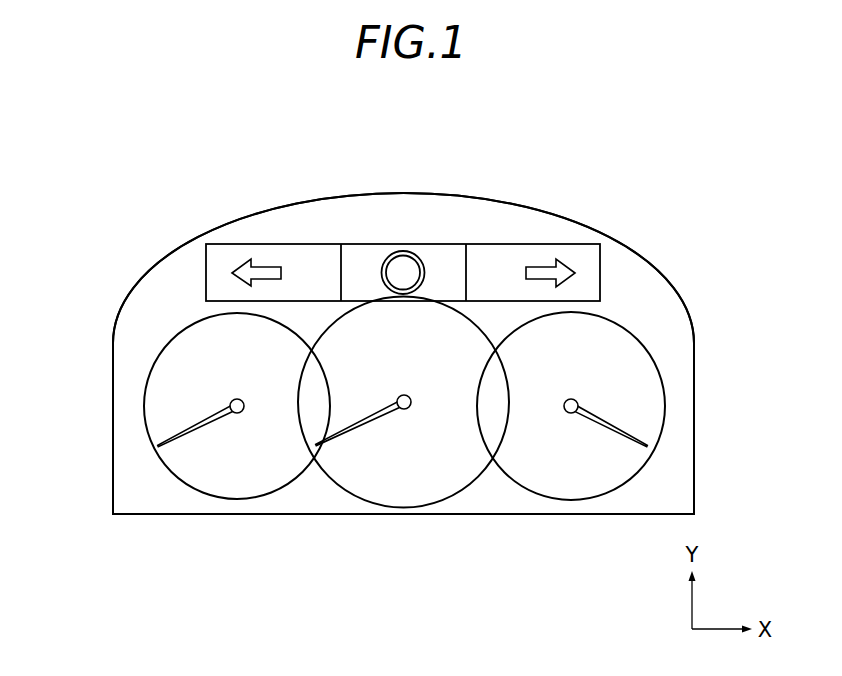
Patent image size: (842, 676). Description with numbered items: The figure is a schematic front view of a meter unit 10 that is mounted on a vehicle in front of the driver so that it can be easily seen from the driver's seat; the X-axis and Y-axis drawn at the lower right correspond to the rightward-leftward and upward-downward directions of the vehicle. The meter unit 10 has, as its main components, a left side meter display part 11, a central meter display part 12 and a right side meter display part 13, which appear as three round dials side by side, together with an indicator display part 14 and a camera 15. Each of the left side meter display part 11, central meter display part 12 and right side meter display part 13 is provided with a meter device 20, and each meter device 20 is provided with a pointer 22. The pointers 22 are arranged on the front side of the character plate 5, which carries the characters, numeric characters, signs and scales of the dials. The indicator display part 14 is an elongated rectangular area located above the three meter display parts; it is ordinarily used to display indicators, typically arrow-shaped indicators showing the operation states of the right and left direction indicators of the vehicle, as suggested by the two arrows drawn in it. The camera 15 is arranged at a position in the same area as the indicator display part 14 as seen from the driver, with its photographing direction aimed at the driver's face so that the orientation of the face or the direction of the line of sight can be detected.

The character plate 5 is at (638, 292).
The meter unit 10 is at (114, 317).
The left side meter display part 11 is at (143, 405).
The central meter display part 12 is at (472, 485).
The right side meter display part 13 is at (666, 405).
The indicator display part 14 is at (555, 239).
The camera 15 is at (402, 250).
The meter device 20 is at (246, 425).
The pointer 22 is at (197, 428).